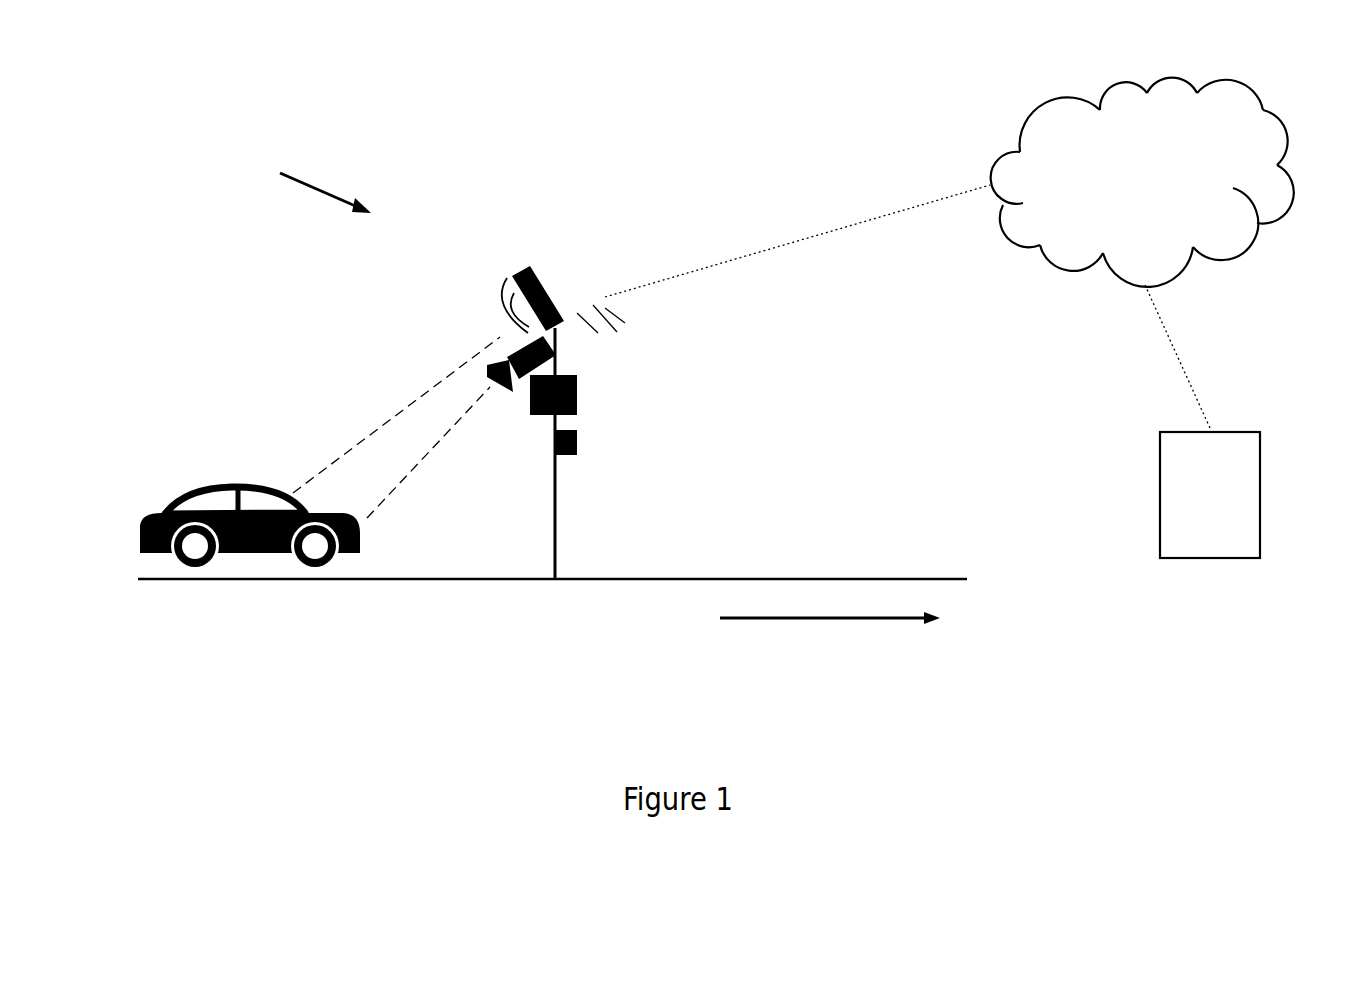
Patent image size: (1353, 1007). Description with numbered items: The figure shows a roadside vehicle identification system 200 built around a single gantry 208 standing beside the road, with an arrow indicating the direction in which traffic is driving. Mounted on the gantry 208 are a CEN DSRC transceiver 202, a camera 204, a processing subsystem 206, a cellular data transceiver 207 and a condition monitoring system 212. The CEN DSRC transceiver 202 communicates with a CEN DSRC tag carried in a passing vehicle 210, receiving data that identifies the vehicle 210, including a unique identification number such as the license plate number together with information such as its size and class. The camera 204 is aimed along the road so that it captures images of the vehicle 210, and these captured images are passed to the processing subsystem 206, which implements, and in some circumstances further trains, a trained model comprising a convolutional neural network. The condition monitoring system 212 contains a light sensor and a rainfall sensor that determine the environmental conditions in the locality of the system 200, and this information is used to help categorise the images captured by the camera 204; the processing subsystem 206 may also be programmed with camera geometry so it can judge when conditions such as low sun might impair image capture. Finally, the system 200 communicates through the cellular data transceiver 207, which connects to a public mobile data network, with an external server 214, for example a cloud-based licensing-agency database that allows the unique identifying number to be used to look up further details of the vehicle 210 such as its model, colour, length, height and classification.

The system 200 is at (304, 169).
The CEN DSRC transceiver 202 is at (545, 287).
The camera 204 is at (512, 357).
The processing subsystem 206 is at (577, 395).
The cellular data transceiver 207 is at (558, 333).
The gantry 208 is at (555, 472).
The vehicle 210 is at (263, 553).
The condition monitoring system 212 is at (577, 440).
The external server 214 is at (1202, 421).